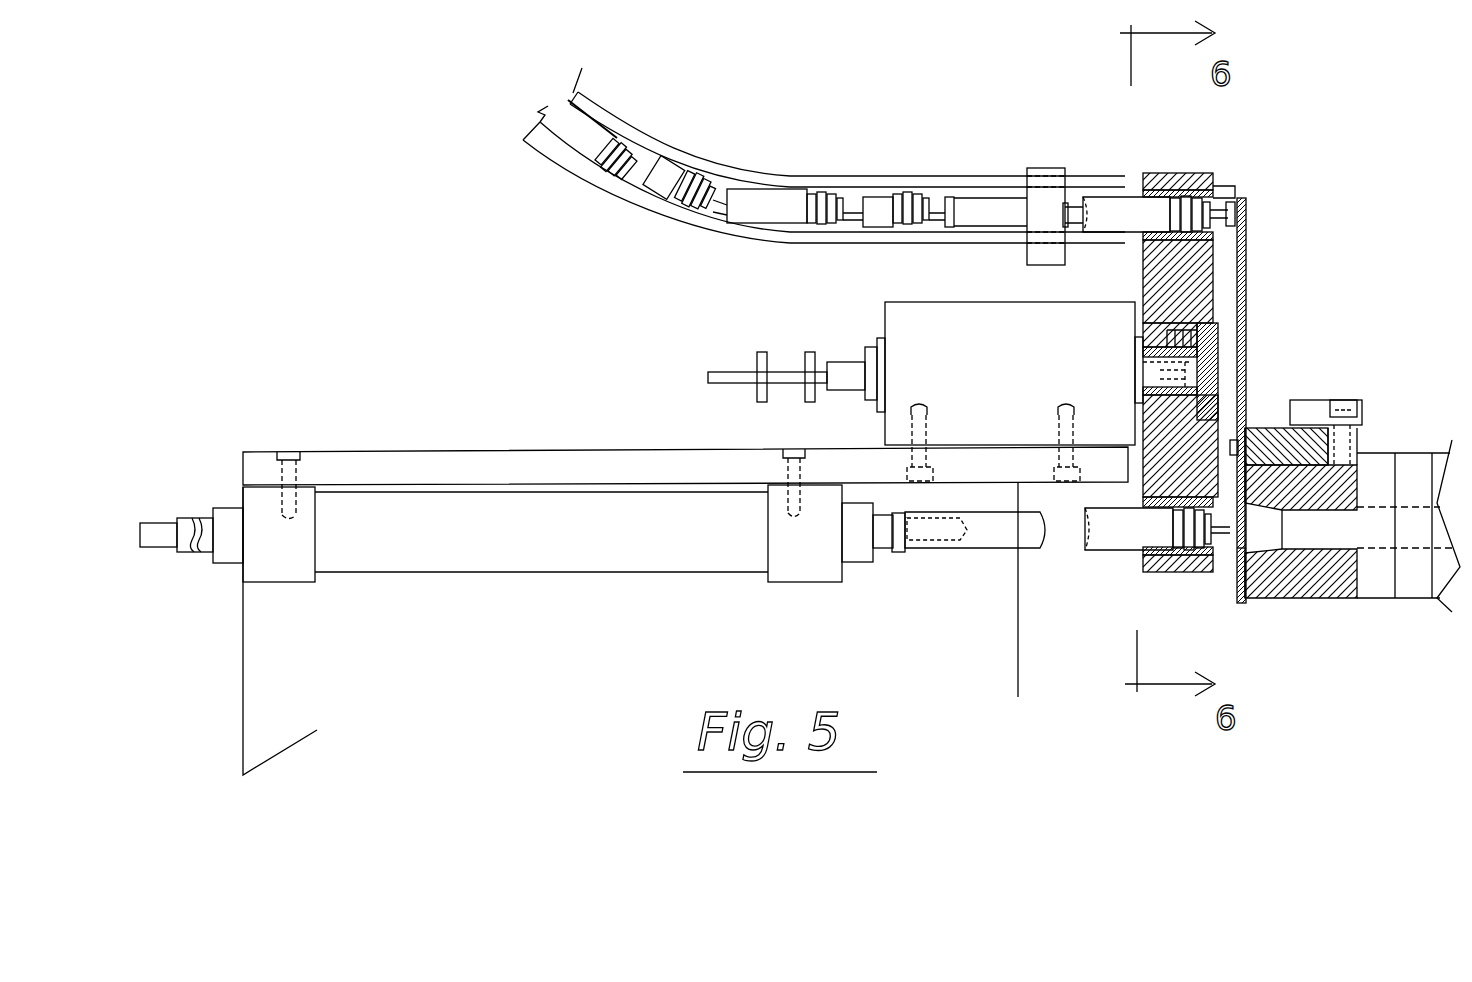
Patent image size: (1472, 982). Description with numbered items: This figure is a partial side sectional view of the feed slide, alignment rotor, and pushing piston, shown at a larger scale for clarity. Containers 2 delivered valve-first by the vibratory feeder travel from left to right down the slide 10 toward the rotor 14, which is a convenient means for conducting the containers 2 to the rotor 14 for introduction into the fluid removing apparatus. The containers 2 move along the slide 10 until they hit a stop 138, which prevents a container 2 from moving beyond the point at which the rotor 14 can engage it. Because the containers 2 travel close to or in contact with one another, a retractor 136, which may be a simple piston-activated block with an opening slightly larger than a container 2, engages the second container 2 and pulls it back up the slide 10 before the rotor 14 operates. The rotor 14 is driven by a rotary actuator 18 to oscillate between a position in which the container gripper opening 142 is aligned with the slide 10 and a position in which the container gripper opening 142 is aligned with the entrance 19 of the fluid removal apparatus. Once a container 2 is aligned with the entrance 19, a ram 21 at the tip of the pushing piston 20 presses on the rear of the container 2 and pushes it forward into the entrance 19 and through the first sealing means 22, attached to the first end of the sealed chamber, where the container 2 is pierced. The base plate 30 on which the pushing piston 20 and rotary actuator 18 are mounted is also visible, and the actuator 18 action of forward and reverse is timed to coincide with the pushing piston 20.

The container 2 is at (797, 202).
The slide 10 is at (827, 177).
The rotor 14 is at (1212, 263).
The rotary actuator 18 is at (965, 313).
The entrance 19 is at (1240, 547).
The pushing piston 20 is at (523, 565).
The ram 21 is at (1000, 543).
The first sealing means 22 is at (1312, 608).
The base plate 30 is at (548, 457).
The retractor 136 is at (1040, 173).
The stop 138 is at (1232, 198).
The container gripper opening 142 is at (1215, 190).